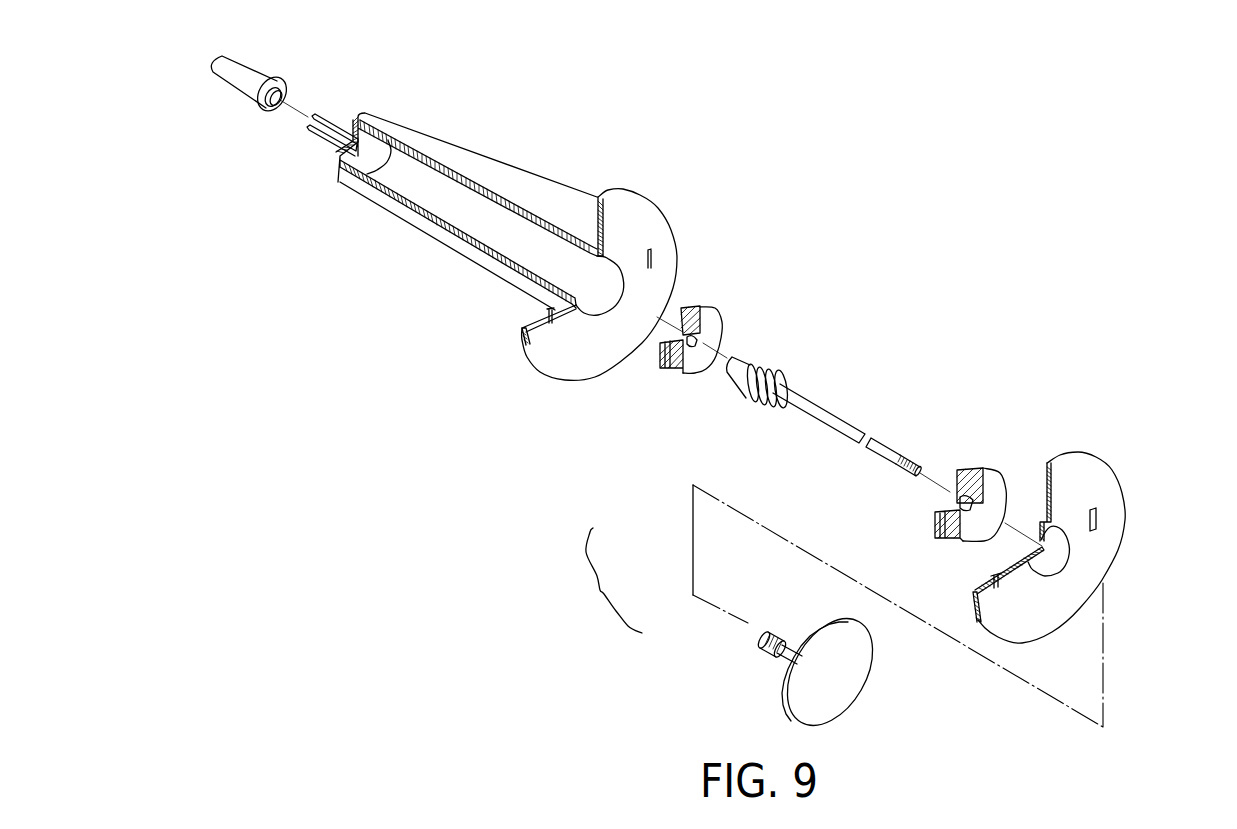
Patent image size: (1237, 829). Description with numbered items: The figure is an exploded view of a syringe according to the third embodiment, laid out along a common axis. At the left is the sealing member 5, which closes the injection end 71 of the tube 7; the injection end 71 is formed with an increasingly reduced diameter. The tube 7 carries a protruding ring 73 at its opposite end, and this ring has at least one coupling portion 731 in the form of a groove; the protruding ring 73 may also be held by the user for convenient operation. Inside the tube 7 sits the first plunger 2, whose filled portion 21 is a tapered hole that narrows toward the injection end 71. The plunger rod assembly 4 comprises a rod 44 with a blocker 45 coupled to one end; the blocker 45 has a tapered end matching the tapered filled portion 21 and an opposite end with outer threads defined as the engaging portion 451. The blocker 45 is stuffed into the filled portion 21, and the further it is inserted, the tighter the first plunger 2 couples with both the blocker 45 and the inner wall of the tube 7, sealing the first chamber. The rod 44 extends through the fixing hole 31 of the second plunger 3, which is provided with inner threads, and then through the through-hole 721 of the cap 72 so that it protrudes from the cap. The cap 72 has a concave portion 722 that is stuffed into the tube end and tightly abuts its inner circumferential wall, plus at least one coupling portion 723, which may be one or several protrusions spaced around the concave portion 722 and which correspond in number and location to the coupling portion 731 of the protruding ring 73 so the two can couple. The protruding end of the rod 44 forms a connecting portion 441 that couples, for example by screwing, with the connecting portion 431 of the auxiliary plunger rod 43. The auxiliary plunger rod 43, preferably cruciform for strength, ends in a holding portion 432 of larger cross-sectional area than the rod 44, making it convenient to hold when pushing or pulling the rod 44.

The sealing member 5 is at (247, 90).
The injection end 71 is at (320, 118).
The tube 7 is at (448, 155).
The protruding ring 73 is at (648, 210).
The coupling portion 731 is at (651, 258).
The first plunger 2 is at (731, 313).
The filled portion 21 is at (700, 338).
The plunger rod assembly 4 is at (757, 535).
The blocker 45 is at (739, 430).
The engaging portion 451 is at (787, 367).
The rod 44 is at (777, 481).
The connecting portion 441 is at (910, 458).
The auxiliary plunger rod 43 is at (781, 673).
The connecting portion 431 is at (757, 643).
The holding portion 432 is at (833, 700).
The second plunger 3 is at (925, 465).
The fixing hole 31 is at (950, 493).
The cap 72 is at (1044, 533).
The through-hole 721 is at (1045, 547).
The concave portion 722 is at (1043, 553).
The coupling portion 723 is at (1097, 508).